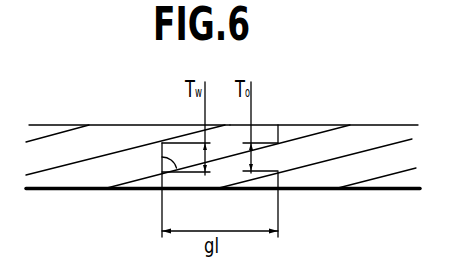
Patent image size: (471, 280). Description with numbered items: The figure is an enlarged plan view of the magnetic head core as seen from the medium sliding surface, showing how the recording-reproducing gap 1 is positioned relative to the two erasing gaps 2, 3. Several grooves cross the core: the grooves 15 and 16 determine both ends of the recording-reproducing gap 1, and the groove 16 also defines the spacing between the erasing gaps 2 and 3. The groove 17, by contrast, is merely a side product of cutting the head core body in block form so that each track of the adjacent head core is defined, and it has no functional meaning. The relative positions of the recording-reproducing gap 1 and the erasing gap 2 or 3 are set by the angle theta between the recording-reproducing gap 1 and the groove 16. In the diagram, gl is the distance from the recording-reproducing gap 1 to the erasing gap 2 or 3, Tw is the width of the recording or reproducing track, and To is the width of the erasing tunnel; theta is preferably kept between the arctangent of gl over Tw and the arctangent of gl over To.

The recording-reproducing gap 1 is at (157, 157).
The erasing gap 2 is at (278, 143).
The erasing gap 3 is at (278, 174).
The groove 15 is at (107, 132).
The groove 16 is at (374, 132).
The groove 17 is at (391, 180).